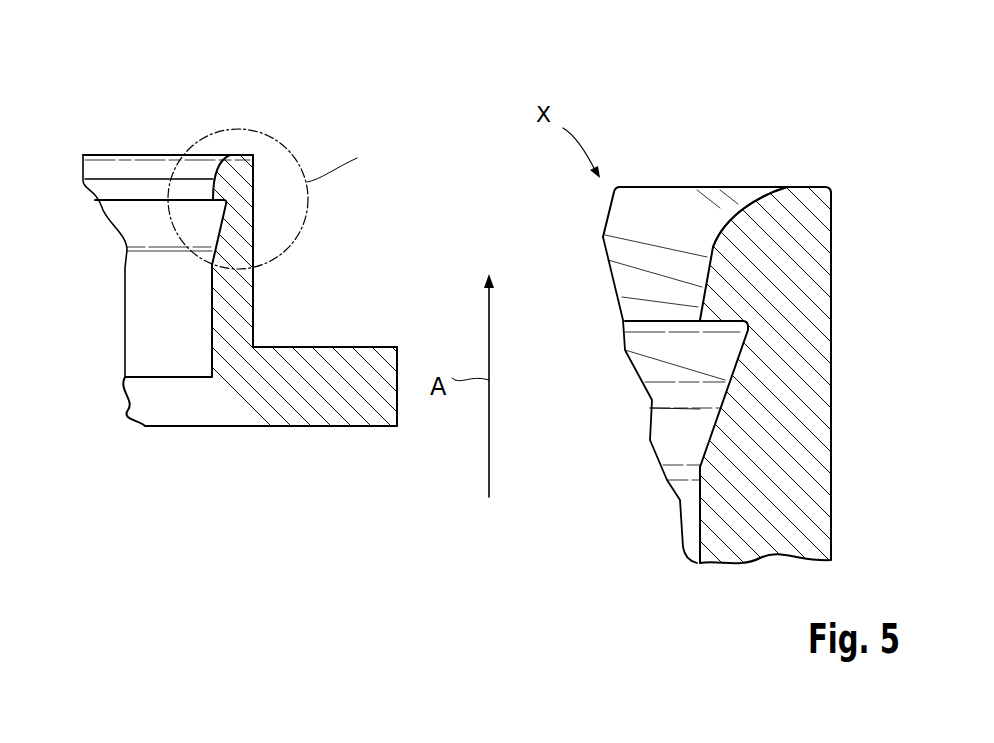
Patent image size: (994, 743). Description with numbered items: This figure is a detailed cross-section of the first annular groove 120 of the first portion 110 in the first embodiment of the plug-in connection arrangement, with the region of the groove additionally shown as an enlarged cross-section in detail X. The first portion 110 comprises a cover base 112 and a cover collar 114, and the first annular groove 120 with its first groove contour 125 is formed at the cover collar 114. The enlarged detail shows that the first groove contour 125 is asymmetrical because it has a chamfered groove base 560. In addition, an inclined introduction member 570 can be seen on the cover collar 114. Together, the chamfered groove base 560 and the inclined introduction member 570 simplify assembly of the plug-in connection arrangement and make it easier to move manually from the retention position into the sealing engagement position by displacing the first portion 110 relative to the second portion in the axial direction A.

The first portion 110 is at (497, 308).
The cover base 112 is at (168, 418).
The cover collar 114 is at (242, 302).
The first annular groove 120 is at (722, 345).
The first groove contour 125 is at (737, 372).
The chamfered groove base 560 is at (693, 394).
The inclined introduction member 570 is at (750, 207).